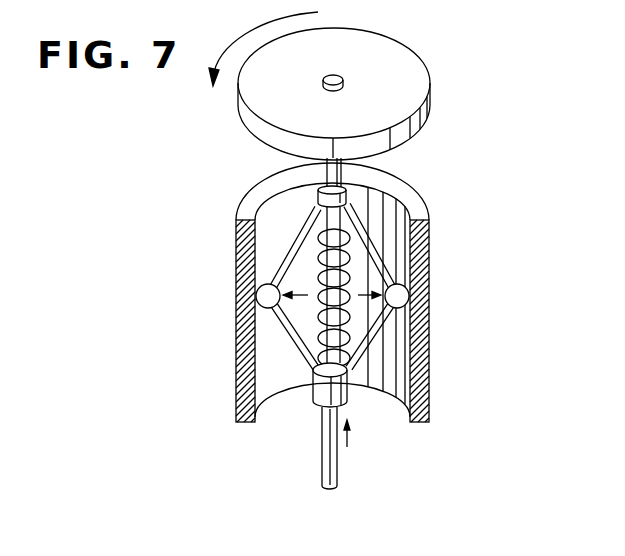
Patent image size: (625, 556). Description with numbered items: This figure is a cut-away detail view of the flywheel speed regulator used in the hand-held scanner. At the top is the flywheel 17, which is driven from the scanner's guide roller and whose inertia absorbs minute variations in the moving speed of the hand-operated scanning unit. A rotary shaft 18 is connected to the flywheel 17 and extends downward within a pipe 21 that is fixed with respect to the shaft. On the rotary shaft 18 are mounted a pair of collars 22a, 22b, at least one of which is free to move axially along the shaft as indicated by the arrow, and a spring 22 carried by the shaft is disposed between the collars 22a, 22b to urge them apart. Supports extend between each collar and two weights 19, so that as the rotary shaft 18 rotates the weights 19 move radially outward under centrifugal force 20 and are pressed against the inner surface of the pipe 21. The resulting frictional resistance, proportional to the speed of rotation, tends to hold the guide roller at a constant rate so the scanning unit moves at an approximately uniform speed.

The flywheel 17 is at (392, 57).
The rotary shaft 18 is at (328, 458).
The weight 19 is at (403, 302).
The centrifugal force 20 is at (362, 295).
The pipe 21 is at (428, 268).
The spring 22 is at (320, 252).
The collar 22a is at (347, 201).
The collar 22b is at (349, 393).